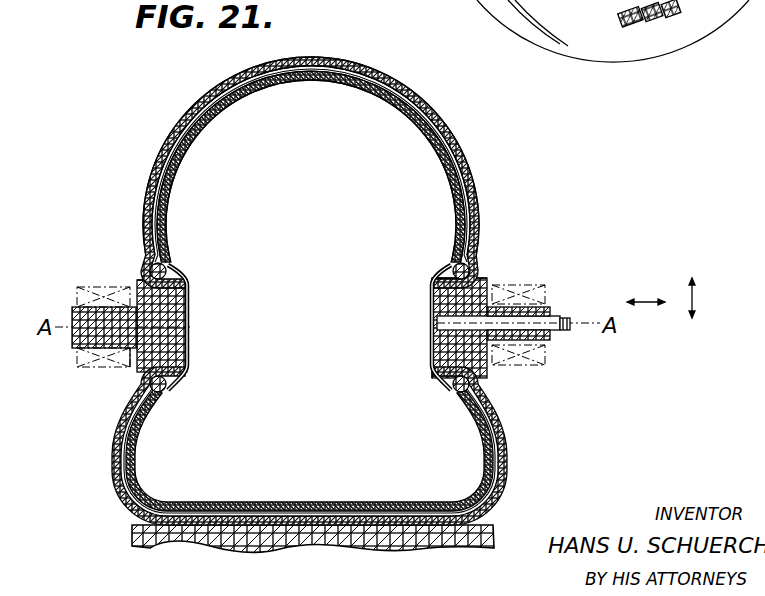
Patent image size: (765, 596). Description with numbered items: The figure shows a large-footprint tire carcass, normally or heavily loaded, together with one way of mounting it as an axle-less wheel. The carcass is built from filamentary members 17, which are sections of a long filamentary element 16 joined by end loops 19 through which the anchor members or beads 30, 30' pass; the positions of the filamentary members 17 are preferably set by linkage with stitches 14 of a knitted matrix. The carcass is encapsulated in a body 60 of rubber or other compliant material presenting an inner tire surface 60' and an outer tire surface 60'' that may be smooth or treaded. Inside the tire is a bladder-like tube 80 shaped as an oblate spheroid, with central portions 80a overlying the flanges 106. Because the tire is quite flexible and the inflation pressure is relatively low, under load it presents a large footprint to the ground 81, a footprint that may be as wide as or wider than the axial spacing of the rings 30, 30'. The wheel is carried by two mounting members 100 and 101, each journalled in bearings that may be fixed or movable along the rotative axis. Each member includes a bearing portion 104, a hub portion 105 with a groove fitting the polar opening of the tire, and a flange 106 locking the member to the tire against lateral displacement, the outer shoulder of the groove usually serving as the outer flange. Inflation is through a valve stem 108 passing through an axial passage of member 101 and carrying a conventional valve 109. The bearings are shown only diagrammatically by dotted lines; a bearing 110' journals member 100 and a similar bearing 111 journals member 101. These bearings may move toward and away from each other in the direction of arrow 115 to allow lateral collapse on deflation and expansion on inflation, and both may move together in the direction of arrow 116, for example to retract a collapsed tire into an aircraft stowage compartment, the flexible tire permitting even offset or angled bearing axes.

The stitches 14 is at (457, 156).
The filamentary element 16 is at (440, 125).
The filamentary members 17 is at (466, 174).
The end loops 19 is at (446, 285).
The anchor member 30 is at (196, 315).
The anchor member 30' is at (492, 311).
The encapsulating body 60 is at (323, 291).
The inner tire surface 60' is at (311, 171).
The outer tire surface 60'' is at (311, 156).
The tube 80 is at (252, 92).
The central portions 80a is at (192, 318).
The ground 81 is at (137, 524).
The mounting member 100 is at (100, 352).
The mounting member 101 is at (517, 355).
The bearing portion 104 is at (97, 306).
The hub portion 105 is at (168, 342).
The flange 106 is at (186, 281).
The valve stem 108 is at (530, 335).
The valve 109 is at (568, 316).
The hub 110' is at (99, 382).
The bearing 111 is at (548, 354).
The arrow 115 is at (650, 300).
The arrow 116 is at (694, 297).